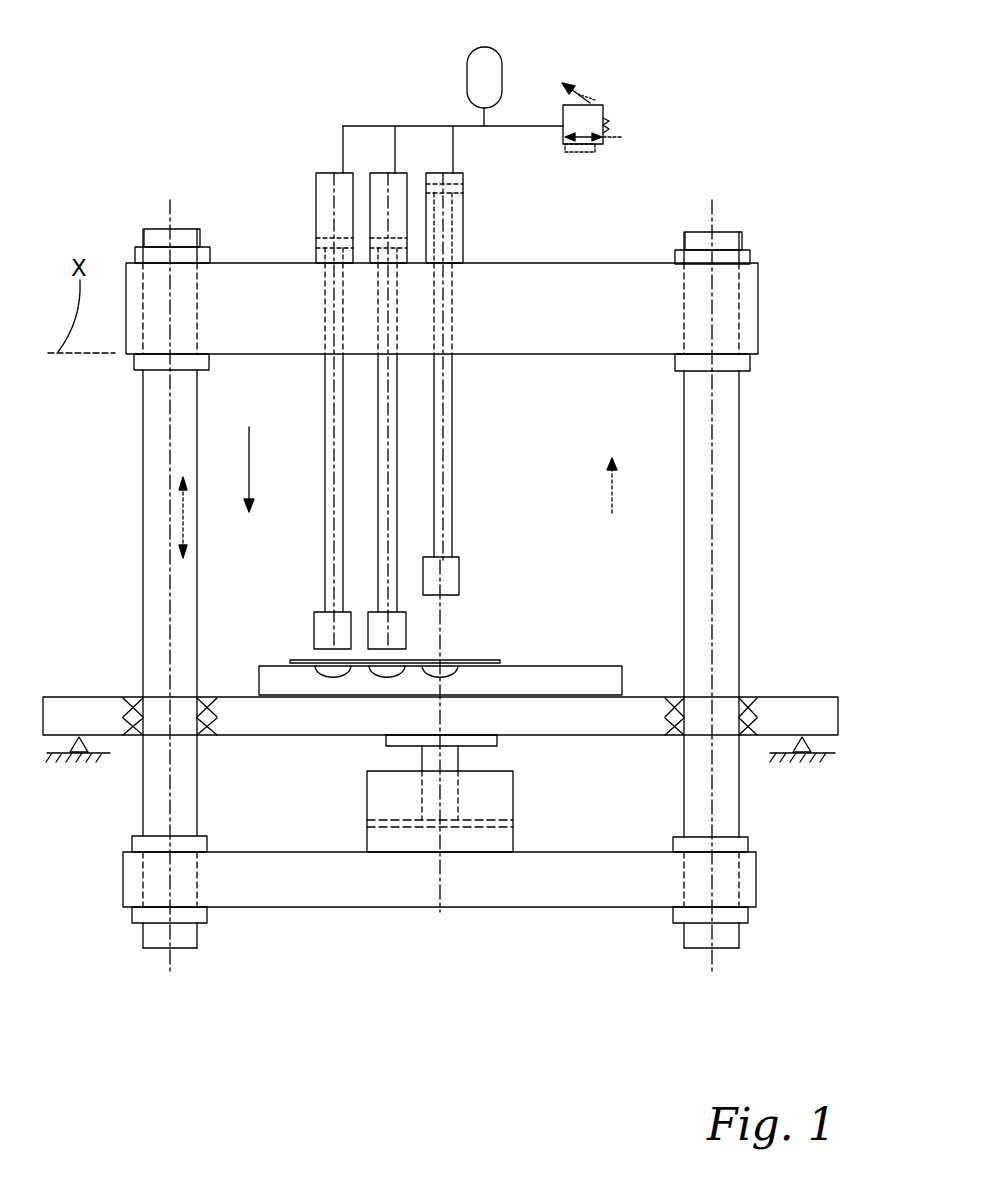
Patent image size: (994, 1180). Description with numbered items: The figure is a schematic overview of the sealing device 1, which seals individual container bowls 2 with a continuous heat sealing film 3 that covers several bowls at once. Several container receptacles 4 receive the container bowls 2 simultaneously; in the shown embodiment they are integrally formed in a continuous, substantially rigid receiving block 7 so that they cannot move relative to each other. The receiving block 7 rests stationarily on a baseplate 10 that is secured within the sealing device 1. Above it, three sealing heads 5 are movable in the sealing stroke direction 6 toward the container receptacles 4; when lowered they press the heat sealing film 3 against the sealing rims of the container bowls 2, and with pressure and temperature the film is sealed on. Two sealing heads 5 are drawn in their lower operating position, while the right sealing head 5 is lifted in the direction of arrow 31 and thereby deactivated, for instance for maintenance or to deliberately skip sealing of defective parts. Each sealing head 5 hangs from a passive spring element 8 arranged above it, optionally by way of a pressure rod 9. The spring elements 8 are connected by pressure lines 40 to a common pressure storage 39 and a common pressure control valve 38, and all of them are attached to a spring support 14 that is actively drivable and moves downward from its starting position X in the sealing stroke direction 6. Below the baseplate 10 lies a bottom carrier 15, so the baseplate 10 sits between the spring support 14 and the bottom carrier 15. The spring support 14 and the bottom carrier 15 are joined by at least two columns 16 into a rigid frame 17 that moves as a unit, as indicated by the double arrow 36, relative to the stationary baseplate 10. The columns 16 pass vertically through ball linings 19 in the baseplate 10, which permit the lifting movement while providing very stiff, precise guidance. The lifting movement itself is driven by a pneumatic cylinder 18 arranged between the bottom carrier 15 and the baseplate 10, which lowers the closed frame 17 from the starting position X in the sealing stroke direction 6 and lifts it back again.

The sealing device 1 is at (450, 504).
The container bowls 2 is at (440, 678).
The heat sealing film 3 is at (475, 662).
The container receptacles 4 is at (309, 680).
The sealing heads 5 is at (322, 625).
The sealing stroke direction 6 is at (249, 478).
The receiving block 7 is at (556, 668).
The spring element 8 is at (432, 177).
The pressure rod 9 is at (333, 405).
The baseplate 10 is at (88, 697).
The spring support 14 is at (597, 321).
The bottom carrier 15 is at (558, 893).
The columns 16 is at (152, 450).
The frame 17 is at (748, 424).
The pneumatic cylinder 18 is at (513, 810).
The ball linings 19 is at (135, 735).
The arrow 31 is at (612, 487).
The double arrow 36 is at (183, 517).
The pressure control valve 38 is at (600, 103).
The pressure storage 39 is at (497, 88).
The pressure lines 40 is at (428, 126).